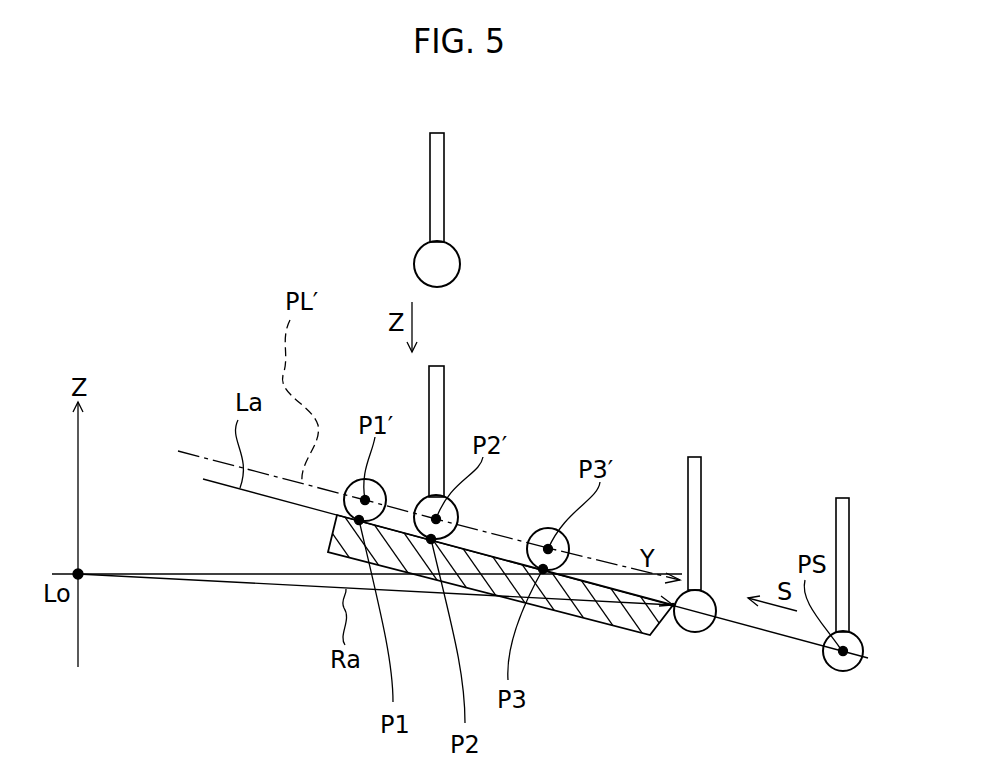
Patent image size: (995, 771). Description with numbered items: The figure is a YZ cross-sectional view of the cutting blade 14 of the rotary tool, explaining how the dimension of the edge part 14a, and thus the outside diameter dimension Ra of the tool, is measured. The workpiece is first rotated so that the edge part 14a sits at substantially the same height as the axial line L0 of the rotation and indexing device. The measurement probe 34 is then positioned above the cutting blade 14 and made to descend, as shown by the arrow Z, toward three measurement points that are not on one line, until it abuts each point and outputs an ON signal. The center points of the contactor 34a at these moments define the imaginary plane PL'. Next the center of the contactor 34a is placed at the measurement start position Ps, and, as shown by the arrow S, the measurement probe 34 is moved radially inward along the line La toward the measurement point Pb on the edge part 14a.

The cutting blade 14 is at (575, 616).
The edge part 14a is at (673, 606).
The measurement probe 34 is at (444, 417).
The contactor 34a is at (455, 510).